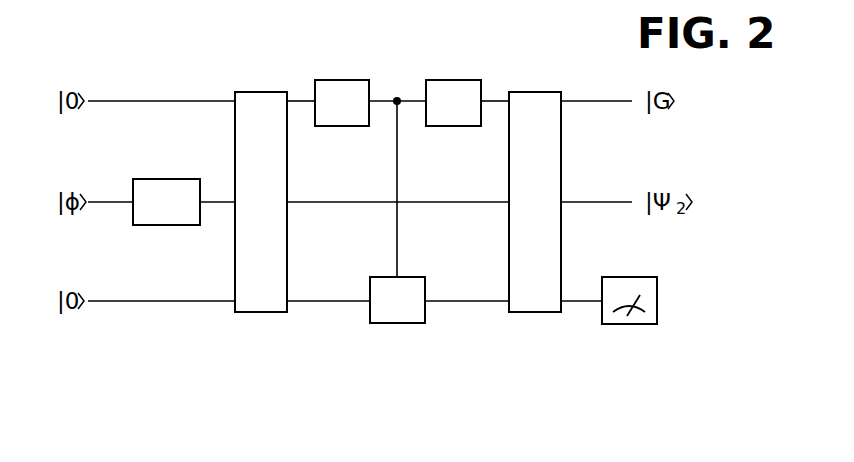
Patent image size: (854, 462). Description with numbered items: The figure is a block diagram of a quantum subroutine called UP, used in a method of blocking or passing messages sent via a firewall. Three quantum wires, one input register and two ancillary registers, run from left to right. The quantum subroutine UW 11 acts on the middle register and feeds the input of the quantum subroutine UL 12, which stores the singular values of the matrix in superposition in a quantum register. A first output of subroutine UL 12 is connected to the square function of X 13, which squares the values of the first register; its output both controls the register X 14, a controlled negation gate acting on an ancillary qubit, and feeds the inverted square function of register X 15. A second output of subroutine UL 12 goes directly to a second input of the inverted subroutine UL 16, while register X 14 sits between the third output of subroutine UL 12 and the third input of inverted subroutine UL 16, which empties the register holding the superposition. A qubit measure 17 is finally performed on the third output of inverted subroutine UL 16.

The quantum subroutine UW 11 is at (153, 177).
The quantum subroutine UL 12 is at (251, 91).
The square function of X 13 is at (332, 79).
The register X 14 is at (397, 325).
The inverted square function of register X 15 is at (462, 79).
The inverted subroutine UL 16 is at (551, 91).
The measurement device 17 is at (632, 326).